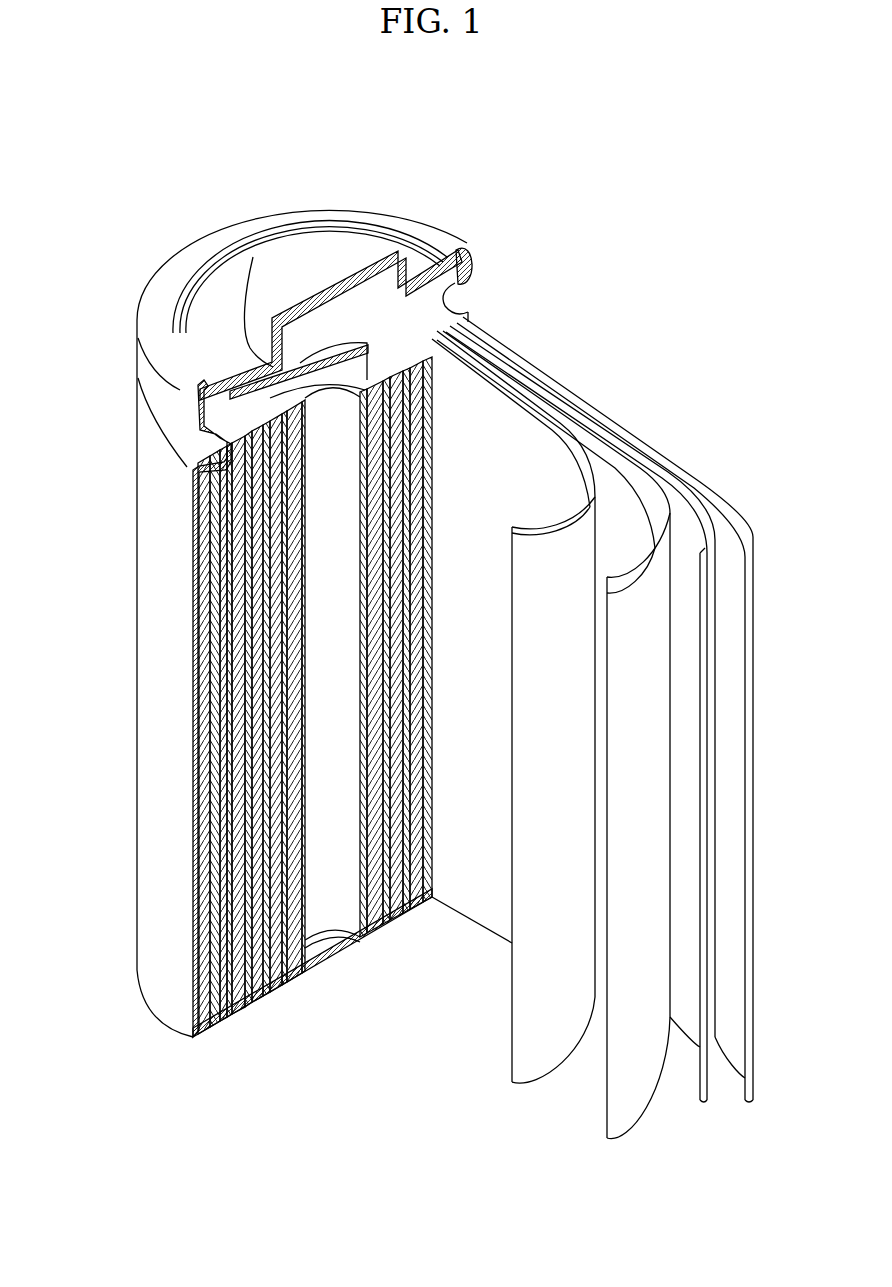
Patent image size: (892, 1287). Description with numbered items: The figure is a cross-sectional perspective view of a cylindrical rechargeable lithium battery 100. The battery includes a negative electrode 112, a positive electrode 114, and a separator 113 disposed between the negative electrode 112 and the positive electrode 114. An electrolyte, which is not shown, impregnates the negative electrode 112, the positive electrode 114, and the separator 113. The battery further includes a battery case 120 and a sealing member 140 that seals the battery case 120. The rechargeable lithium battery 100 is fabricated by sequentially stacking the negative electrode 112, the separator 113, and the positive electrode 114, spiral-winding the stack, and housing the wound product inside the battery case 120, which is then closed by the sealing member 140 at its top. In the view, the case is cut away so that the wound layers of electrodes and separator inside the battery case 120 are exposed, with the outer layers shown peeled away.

The rechargeable lithium battery 100 is at (536, 207).
The negative electrode 112 is at (722, 488).
The separator 113 is at (535, 410).
The positive electrode 114 is at (602, 447).
The battery case 120 is at (138, 573).
The sealing member 140 is at (305, 267).